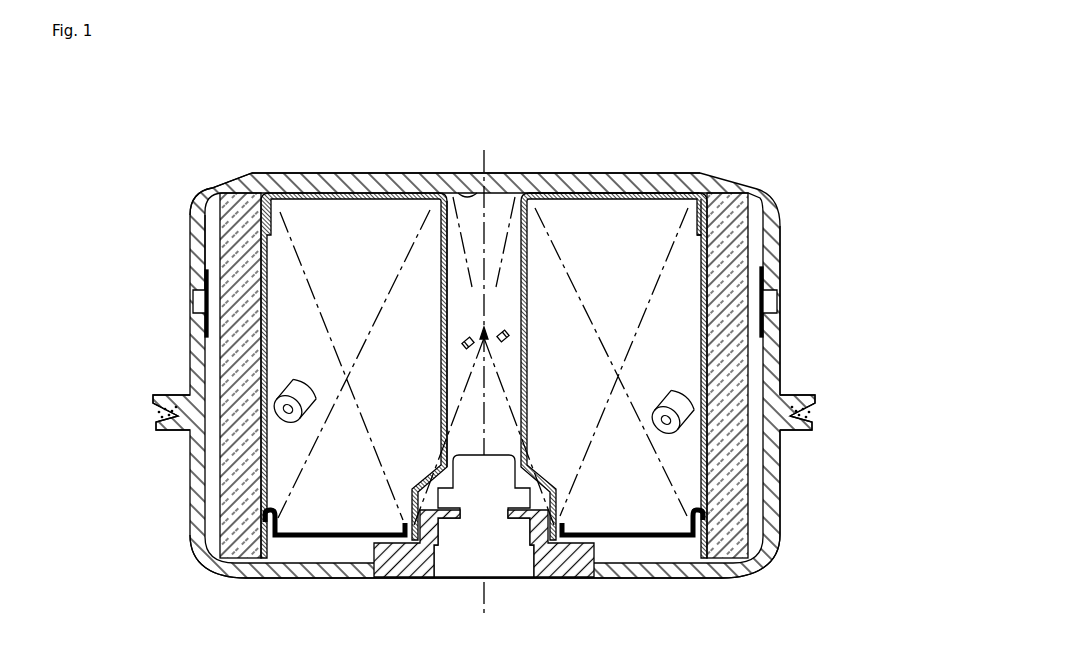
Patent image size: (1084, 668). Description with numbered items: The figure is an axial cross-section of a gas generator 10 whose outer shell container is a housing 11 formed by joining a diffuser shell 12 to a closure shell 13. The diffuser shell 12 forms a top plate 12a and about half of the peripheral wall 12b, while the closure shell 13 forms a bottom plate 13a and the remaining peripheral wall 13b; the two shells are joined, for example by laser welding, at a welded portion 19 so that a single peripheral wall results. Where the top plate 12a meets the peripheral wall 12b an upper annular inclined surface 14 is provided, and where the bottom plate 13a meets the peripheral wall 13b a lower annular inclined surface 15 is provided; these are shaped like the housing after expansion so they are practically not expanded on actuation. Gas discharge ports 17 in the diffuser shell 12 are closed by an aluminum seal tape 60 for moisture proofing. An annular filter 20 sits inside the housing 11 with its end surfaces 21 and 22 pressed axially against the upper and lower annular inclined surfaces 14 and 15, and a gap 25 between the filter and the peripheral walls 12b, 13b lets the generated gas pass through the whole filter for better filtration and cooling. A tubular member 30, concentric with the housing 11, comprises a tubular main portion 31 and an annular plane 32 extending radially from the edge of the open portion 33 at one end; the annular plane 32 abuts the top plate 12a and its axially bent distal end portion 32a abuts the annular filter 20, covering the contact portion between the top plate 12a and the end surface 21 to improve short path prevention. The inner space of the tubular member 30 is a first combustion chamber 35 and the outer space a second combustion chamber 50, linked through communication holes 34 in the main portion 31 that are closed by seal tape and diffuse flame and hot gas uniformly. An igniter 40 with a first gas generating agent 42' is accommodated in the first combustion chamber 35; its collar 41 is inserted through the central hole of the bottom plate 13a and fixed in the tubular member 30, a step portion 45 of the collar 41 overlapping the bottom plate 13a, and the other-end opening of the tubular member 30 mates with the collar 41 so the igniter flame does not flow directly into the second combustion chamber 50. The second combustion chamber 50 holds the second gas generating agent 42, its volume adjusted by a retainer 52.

The gas generator 10 is at (587, 147).
The housing 11 is at (912, 355).
The diffuser shell 12 is at (777, 362).
The top plate 12a is at (318, 171).
The peripheral wall 12b is at (770, 237).
The closure shell 13 is at (777, 460).
The bottom plate 13a is at (657, 575).
The peripheral wall 13b is at (780, 516).
The upper annular inclined surface 14 is at (733, 176).
The lower annular inclined surface 15 is at (738, 574).
The gas discharge ports 17 is at (777, 297).
The welded portion 19 is at (153, 418).
The annular filter 20 is at (232, 495).
The end surface 21 is at (243, 185).
The end surface 22 is at (233, 570).
The gap 25 is at (217, 233).
The tubular member 30 is at (437, 283).
The tubular main portion 31 is at (528, 230).
The annular plane 32 is at (620, 197).
The distal end portion 32a is at (687, 210).
The open portion 33 is at (450, 192).
The communication holes 34 is at (443, 367).
The first combustion chamber 35 is at (494, 322).
The igniter 40 is at (500, 473).
The collar 41 is at (395, 578).
The second gas generating agent 42 is at (400, 398).
The small rivet 42' is at (516, 333).
The step portion 45 is at (593, 578).
The second combustion chamber 50 is at (580, 390).
The retainer 52 is at (312, 540).
The aluminum seal tape 60 is at (203, 327).